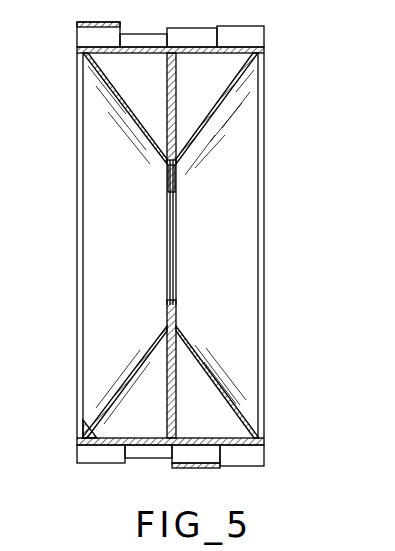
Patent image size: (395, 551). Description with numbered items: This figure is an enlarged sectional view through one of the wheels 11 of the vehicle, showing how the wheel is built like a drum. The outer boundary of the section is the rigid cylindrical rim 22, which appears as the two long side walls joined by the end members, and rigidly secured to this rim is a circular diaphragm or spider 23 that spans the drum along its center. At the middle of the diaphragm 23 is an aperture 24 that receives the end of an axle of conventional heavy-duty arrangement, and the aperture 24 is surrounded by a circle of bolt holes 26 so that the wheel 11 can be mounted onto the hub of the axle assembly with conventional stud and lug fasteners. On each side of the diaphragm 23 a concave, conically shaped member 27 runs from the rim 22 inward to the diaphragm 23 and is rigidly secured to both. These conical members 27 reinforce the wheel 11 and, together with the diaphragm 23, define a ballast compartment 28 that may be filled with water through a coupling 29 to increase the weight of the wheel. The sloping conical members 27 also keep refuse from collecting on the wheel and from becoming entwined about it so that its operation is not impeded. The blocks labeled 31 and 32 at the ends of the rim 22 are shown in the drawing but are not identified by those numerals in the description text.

The wheel 11 is at (72, 98).
The rigid cylindrical rim 22 is at (77, 49).
The circular diaphragm or spider 23 is at (167, 102).
The aperture 24 is at (167, 190).
The bolt holes 26 is at (168, 181).
The concave, conically shaped member 27 is at (125, 380).
The ballast compartment 28 is at (155, 411).
The coupling 29 is at (93, 417).
The bottom mounting blocks 31 is at (178, 472).
The top mounting blocks 32 is at (180, 28).